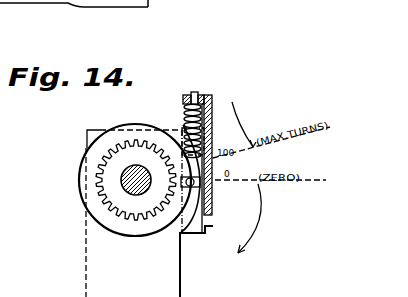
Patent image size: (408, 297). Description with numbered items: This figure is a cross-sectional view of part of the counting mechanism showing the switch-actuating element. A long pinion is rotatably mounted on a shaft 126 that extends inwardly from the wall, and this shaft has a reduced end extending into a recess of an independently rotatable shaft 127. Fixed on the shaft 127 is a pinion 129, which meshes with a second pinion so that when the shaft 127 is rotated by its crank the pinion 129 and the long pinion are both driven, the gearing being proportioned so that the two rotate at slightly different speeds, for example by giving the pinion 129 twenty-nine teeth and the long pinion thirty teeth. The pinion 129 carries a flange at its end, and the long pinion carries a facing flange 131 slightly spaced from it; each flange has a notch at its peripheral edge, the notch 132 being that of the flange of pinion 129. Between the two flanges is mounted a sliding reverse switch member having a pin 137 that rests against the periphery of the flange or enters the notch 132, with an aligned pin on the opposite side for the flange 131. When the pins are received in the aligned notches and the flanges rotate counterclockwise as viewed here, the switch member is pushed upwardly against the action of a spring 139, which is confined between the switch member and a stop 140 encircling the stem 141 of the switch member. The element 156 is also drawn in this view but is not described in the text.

The shaft 126 is at (123, 182).
The independently rotatable shaft 127 is at (137, 197).
The pinion 129 is at (110, 210).
The flange 131 is at (86, 143).
The notch 132 is at (213, 224).
The pin 137 is at (194, 183).
The spring 139 is at (185, 113).
The stop 140 is at (205, 93).
The stem 141 is at (195, 92).
The frame bracket 156 is at (190, 236).